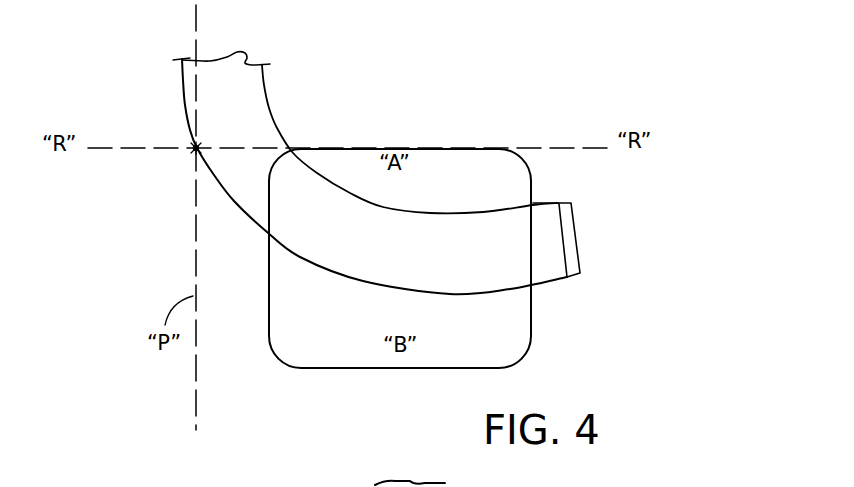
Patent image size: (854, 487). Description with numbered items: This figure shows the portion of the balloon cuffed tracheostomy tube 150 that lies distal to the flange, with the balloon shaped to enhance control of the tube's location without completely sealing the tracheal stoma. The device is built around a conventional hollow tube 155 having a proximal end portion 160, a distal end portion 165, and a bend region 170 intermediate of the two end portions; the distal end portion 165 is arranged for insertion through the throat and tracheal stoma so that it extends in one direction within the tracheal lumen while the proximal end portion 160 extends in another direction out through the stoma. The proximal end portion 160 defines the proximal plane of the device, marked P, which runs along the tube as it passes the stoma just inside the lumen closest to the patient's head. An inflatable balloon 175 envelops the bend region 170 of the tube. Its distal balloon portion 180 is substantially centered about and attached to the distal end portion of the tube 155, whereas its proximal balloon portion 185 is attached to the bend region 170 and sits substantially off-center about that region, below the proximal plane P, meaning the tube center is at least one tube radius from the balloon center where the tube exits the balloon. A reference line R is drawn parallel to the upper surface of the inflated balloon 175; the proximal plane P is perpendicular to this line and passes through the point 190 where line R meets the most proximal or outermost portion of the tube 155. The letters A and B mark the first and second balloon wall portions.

The balloon cuffed tracheostomy tube 150 is at (598, 90).
The hollow tube 155 is at (250, 112).
The proximal end portion 160 is at (193, 90).
The distal end portion 165 is at (552, 224).
The bend region 170 is at (421, 259).
The inflatable balloon 175 is at (449, 160).
The distal balloon portion 180 is at (500, 327).
The proximal balloon portion 185 is at (283, 272).
The point 190 is at (193, 152).